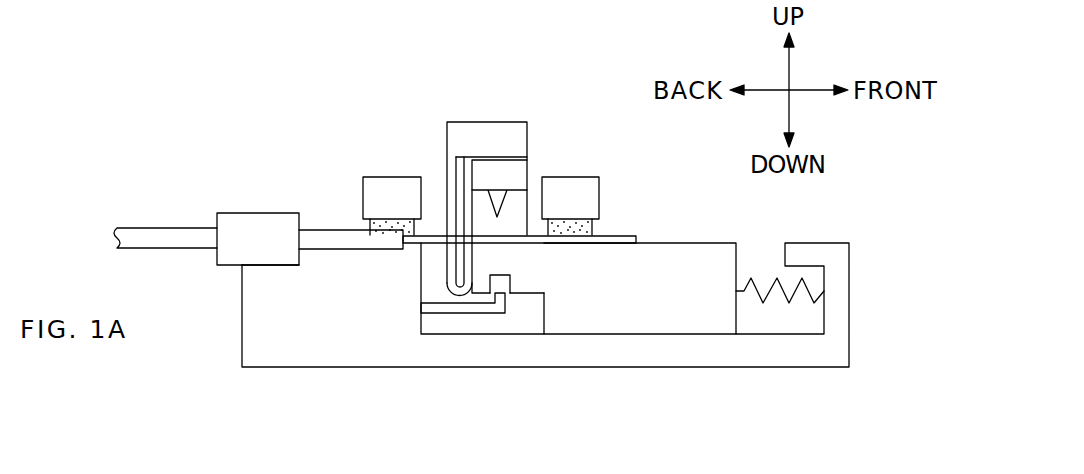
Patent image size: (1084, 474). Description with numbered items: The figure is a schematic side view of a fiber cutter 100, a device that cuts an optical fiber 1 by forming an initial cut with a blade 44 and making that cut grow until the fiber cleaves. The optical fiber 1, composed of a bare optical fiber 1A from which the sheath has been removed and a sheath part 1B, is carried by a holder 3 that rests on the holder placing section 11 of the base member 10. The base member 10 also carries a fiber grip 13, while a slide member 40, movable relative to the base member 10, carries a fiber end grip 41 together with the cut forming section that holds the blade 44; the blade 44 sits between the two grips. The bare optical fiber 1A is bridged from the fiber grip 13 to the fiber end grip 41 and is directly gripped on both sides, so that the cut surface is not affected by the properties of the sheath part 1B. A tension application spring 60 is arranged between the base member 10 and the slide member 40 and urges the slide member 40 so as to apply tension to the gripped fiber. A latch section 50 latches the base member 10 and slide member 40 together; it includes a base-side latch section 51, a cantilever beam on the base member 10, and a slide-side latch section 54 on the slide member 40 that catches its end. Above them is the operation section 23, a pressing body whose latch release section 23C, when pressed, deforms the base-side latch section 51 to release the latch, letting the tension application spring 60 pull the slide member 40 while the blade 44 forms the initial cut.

The fiber cutter 100 is at (258, 108).
The base member 10 is at (256, 331).
The holder placing section 11 is at (268, 265).
The optical fiber 1 is at (170, 230).
The bare optical fiber 1A is at (620, 234).
The sheath part 1B is at (324, 230).
The holder 3 is at (254, 225).
The fiber grip 13 is at (386, 153).
The fiber end grip 41 is at (570, 153).
The operation section 23 is at (489, 239).
The latch release section 23C is at (450, 268).
The blade 44 is at (498, 197).
The slide member 40 is at (704, 248).
The tension application spring 60 is at (762, 279).
The latch section 50 is at (488, 370).
The base-side latch section 51 is at (502, 308).
The slide-side latch section 54 is at (490, 283).